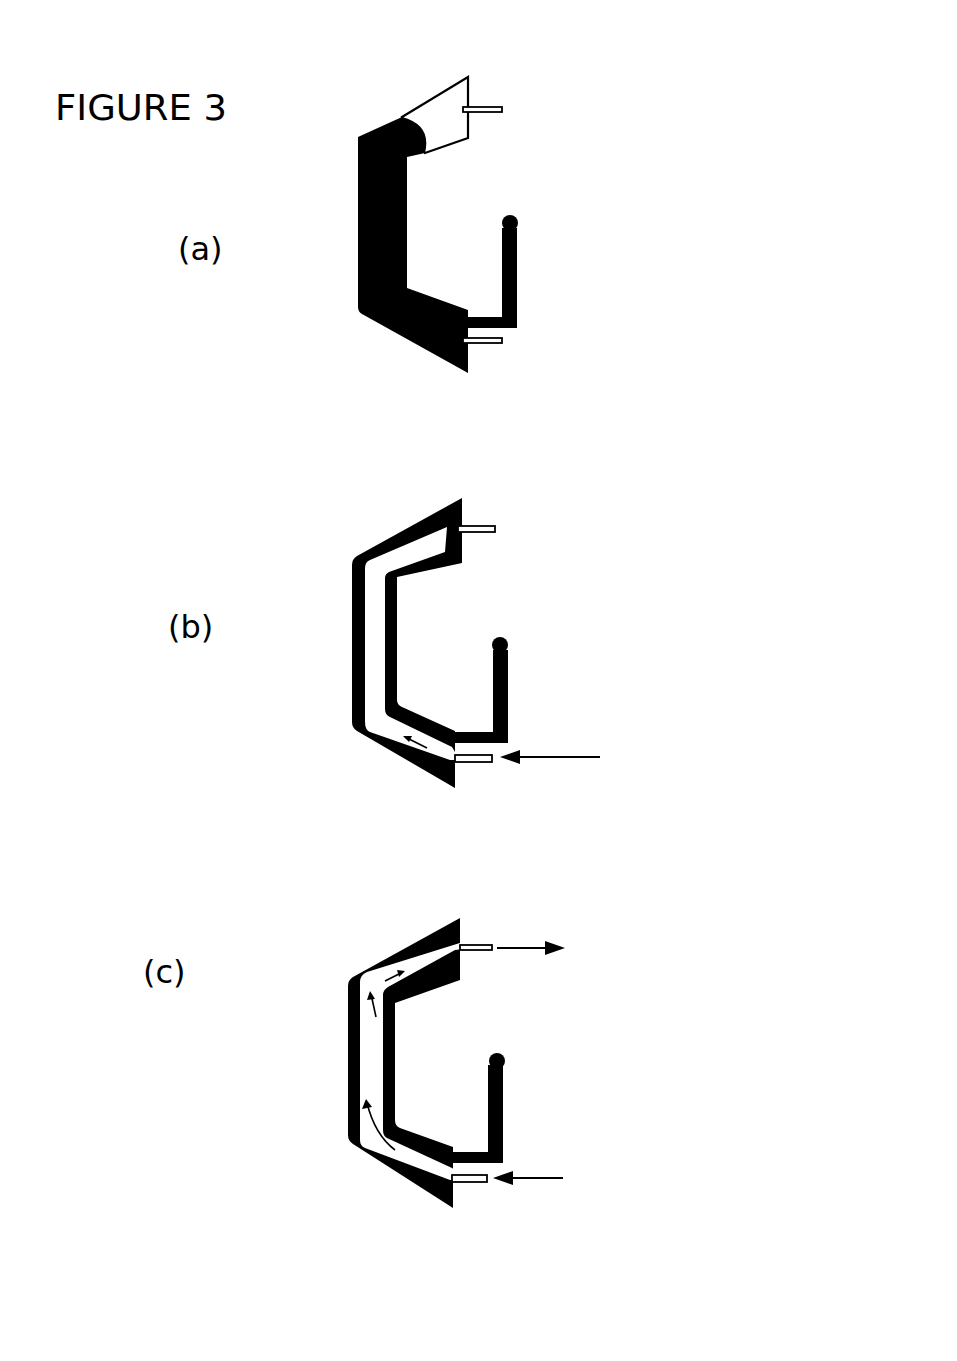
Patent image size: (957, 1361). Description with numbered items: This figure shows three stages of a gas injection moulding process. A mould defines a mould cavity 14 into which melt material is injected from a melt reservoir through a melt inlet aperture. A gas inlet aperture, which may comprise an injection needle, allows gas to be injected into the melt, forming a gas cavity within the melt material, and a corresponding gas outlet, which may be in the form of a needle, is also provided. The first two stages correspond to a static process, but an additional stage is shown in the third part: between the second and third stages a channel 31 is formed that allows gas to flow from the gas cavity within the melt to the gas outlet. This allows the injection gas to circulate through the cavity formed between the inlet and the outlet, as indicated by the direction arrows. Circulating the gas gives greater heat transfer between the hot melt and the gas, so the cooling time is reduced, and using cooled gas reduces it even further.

The mould cavity 14 is at (427, 115).
The channel 31 is at (463, 953).